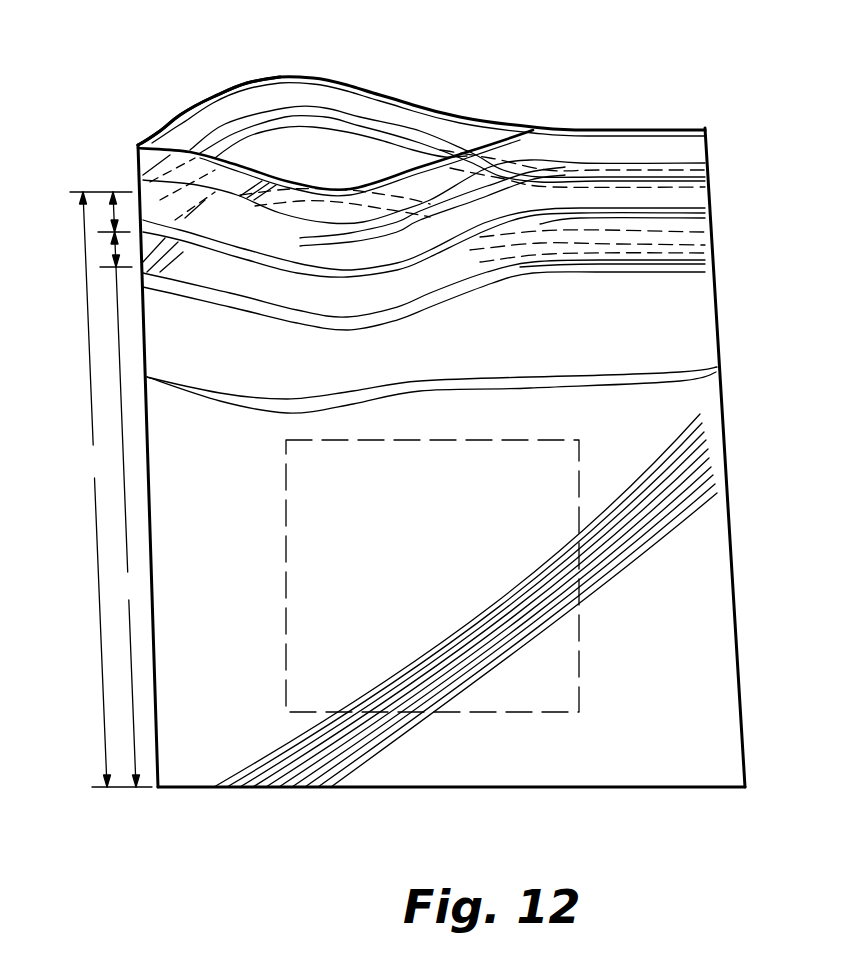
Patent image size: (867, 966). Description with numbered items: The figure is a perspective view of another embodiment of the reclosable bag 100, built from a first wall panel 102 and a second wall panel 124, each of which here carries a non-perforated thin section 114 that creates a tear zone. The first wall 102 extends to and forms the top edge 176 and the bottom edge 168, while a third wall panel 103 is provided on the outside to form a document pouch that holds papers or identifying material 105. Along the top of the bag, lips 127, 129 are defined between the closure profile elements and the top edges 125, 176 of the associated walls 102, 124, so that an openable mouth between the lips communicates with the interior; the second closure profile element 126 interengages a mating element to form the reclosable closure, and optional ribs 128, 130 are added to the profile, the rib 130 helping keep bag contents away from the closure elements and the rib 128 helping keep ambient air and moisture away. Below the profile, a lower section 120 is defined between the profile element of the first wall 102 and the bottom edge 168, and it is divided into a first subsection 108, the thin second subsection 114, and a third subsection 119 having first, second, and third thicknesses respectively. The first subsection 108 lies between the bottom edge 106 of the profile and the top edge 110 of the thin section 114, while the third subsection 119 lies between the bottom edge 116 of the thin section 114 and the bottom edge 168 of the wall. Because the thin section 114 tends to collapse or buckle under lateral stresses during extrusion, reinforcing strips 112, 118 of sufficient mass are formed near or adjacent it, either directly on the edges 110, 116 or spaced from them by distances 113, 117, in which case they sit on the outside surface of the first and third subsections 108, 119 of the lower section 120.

The reclosable bag 100 is at (712, 87).
The first wall panel 102 is at (602, 150).
The third wall panel 103 is at (718, 373).
The identifying material 105 is at (547, 637).
The bottom edge of profile 106 is at (710, 177).
The first subsection 108 is at (112, 248).
The top edge of second subsection 110 is at (705, 237).
The reinforcing strip 112 is at (712, 207).
The distance 113 is at (705, 217).
The non-perforated thin section 114 is at (112, 248).
The bottom edge of second subsection 116 is at (405, 302).
The distance 117 is at (475, 283).
The reinforcing strip 118 is at (577, 274).
The third subsection 119 is at (127, 527).
The lower section 120 is at (111, 489).
The second wall panel 124 is at (325, 102).
The top edge 125 is at (252, 77).
The second closure profile element 126 is at (348, 128).
The lip 127 is at (535, 148).
The rib 128 is at (420, 130).
The lip 129 is at (373, 106).
The rib 130 is at (410, 154).
The bottom edge 168 is at (353, 790).
The top edge 176 is at (200, 100).